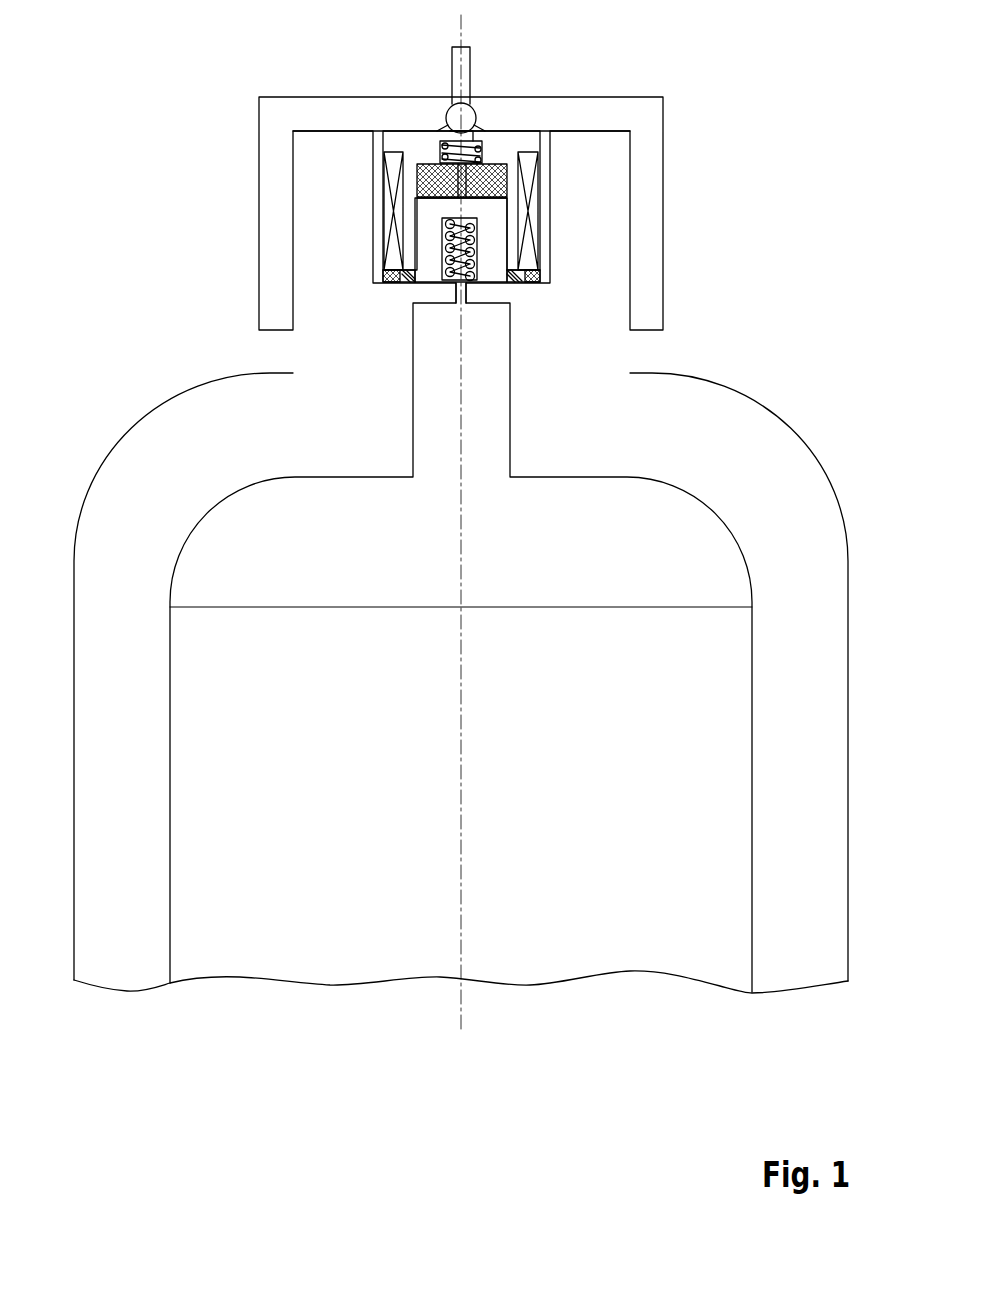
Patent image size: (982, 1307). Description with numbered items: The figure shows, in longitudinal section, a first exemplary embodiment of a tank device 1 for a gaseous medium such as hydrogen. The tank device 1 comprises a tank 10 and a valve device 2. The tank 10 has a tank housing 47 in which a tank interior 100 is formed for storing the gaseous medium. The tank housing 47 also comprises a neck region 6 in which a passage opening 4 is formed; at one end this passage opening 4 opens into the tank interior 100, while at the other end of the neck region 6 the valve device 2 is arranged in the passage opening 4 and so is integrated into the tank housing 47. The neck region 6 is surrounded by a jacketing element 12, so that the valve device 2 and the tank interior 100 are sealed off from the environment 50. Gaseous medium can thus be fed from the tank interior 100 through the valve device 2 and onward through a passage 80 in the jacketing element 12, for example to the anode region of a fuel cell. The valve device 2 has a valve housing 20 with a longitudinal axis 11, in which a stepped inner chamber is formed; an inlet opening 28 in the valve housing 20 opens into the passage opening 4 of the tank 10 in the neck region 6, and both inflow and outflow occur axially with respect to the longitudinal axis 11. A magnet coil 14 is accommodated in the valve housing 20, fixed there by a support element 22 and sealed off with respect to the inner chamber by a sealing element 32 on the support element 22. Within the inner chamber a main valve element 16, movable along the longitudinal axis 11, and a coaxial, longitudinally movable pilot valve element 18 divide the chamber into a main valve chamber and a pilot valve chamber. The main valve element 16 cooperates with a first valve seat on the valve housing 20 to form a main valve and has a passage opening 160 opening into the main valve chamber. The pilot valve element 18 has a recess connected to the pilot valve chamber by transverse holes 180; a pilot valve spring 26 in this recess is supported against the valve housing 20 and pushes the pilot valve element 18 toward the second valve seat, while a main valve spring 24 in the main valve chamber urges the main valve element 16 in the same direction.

The tank device 1 is at (744, 293).
The valve device 2 is at (541, 119).
The passage opening 4 is at (410, 457).
The neck region 6 is at (316, 267).
The tank 10 is at (762, 440).
The longitudinal axis 11 is at (462, 814).
The jacketing element 12 is at (272, 183).
The magnet coil 14 is at (530, 167).
The main valve element 16 is at (492, 187).
The pilot valve element 18 is at (493, 223).
The valve housing 20 is at (522, 144).
The support element 22 is at (388, 284).
The main valve spring 24 is at (443, 146).
The pilot valve spring 26 is at (470, 252).
The inlet opening 28 is at (463, 303).
The sealing element 32 is at (517, 280).
The tank housing 47 is at (148, 745).
The environment 50 is at (176, 92).
The passage 80 is at (467, 62).
The tank interior 100 is at (567, 942).
The passage opening 160 is at (453, 183).
The transverse holes 180 is at (450, 232).